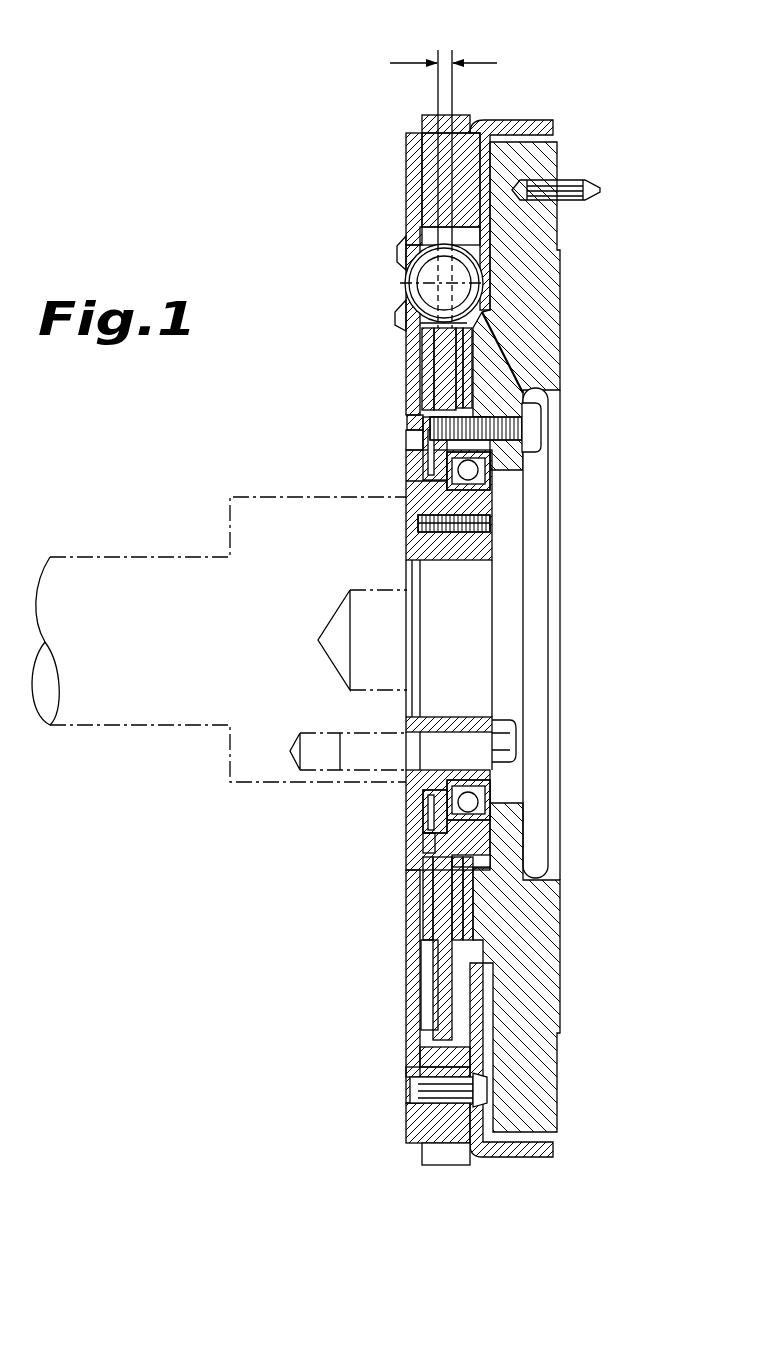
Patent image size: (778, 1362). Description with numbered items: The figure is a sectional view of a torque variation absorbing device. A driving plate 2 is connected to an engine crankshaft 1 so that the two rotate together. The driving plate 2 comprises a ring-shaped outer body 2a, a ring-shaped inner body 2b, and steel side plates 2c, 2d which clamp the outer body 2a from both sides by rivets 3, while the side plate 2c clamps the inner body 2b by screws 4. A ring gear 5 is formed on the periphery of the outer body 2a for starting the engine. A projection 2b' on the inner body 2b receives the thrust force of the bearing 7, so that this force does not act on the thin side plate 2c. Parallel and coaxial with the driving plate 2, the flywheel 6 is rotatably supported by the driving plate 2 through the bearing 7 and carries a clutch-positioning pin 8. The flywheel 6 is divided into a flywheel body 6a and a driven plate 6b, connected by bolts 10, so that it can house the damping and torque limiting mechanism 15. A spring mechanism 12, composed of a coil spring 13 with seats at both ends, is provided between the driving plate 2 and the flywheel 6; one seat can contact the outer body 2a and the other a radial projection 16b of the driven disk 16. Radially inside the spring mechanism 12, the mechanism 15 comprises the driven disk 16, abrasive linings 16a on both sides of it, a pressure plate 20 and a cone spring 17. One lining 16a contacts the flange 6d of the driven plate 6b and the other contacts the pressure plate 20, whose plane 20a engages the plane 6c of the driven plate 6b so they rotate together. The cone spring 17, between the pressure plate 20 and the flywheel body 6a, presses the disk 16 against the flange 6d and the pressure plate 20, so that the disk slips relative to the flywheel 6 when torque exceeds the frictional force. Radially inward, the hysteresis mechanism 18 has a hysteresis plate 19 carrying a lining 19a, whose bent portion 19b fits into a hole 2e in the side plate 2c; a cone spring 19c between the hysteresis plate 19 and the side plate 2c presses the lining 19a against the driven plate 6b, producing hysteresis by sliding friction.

The engine crankshaft 1 is at (180, 556).
The driving plate 2 is at (419, 581).
The outer body 2a is at (470, 130).
The inner body 2b is at (392, 591).
The projection 2b' is at (379, 483).
The side plate 2c is at (413, 212).
The side plate 2d is at (460, 178).
The hole 2e is at (410, 443).
The rivets 3 is at (430, 1088).
The screws 4 is at (416, 524).
The ring gear 5 is at (430, 1160).
The flywheel 6 is at (482, 642).
The flywheel body 6a is at (533, 275).
The driven plate 6b is at (485, 838).
The plane 6c is at (500, 860).
The flange 6d is at (430, 930).
The bearing 7 is at (472, 470).
The clutch-positioning pin 8 is at (598, 191).
The bolts 10 is at (533, 430).
The spring mechanism 12 is at (398, 298).
The coil spring 13 is at (415, 264).
The damping and torque limiting mechanism 15 is at (398, 345).
The driven disk 16 is at (445, 372).
The linings 16a is at (440, 910).
The radial projection 16b is at (400, 283).
The cone spring 17 is at (467, 384).
The hysteresis mechanism 18 is at (404, 464).
The hysteresis plate 19 is at (445, 800).
The lining 19a is at (430, 848).
The bent portion 19b is at (410, 432).
The cone spring 19c is at (440, 820).
The pressure plate 20 is at (460, 343).
The plane 20a is at (470, 872).